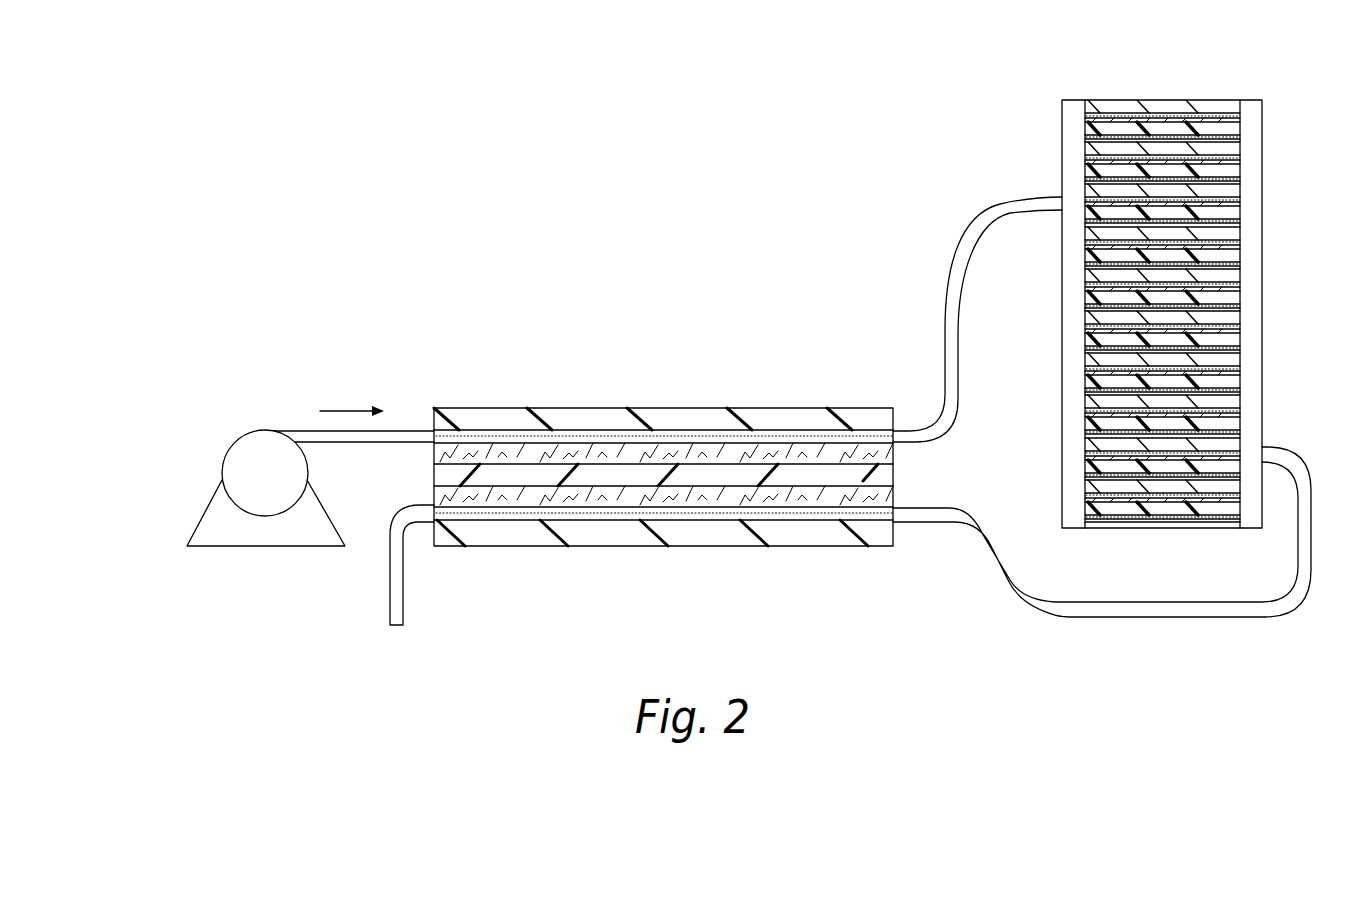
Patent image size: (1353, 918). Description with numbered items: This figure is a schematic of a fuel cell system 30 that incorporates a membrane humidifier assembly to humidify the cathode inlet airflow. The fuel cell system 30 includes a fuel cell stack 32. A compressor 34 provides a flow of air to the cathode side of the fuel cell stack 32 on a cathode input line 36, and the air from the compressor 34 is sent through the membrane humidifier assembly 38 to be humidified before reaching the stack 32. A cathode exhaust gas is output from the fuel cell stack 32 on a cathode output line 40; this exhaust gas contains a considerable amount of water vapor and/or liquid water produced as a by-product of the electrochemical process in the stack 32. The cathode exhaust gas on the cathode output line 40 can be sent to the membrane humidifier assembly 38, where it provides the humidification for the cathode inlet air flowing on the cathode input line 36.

The fuel cell system 30 is at (630, 174).
The fuel cell stack 32 is at (1120, 99).
The compressor 34 is at (241, 432).
The cathode input line 36 is at (961, 268).
The membrane humidifier assembly 38 is at (558, 406).
The cathode output line 40 is at (1102, 618).